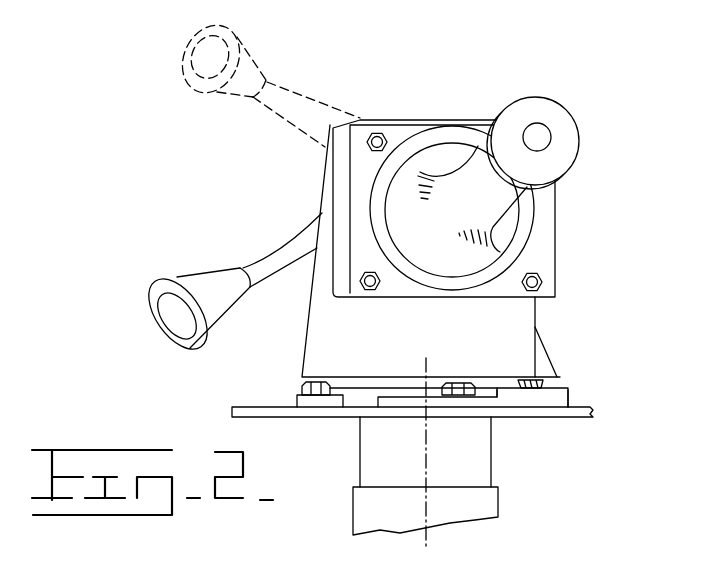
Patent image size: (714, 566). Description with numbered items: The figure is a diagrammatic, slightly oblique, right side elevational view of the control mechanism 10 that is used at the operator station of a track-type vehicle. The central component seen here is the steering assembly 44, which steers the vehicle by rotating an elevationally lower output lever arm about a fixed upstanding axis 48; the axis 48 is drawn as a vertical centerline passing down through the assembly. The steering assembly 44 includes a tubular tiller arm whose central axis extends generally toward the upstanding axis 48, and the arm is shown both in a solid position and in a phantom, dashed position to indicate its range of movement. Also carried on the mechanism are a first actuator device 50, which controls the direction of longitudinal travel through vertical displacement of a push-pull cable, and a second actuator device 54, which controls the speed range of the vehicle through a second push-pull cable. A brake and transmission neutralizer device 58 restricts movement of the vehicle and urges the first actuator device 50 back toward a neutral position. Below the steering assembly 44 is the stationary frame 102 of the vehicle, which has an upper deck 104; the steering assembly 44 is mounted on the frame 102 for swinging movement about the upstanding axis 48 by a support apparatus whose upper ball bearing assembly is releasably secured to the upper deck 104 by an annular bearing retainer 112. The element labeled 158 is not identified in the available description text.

The control mechanism 10 is at (562, 250).
The steering assembly 44 is at (433, 339).
The fixed upstanding axis 48 is at (427, 443).
The first actuator device 50 is at (468, 172).
The second actuator device 54 is at (538, 97).
The brake and transmission neutralizer device 58 is at (284, 241).
The stationary frame 102 is at (232, 411).
The upper deck 104 is at (282, 405).
The annular bearing retainer 112 is at (575, 398).
The knob 158 is at (227, 266).